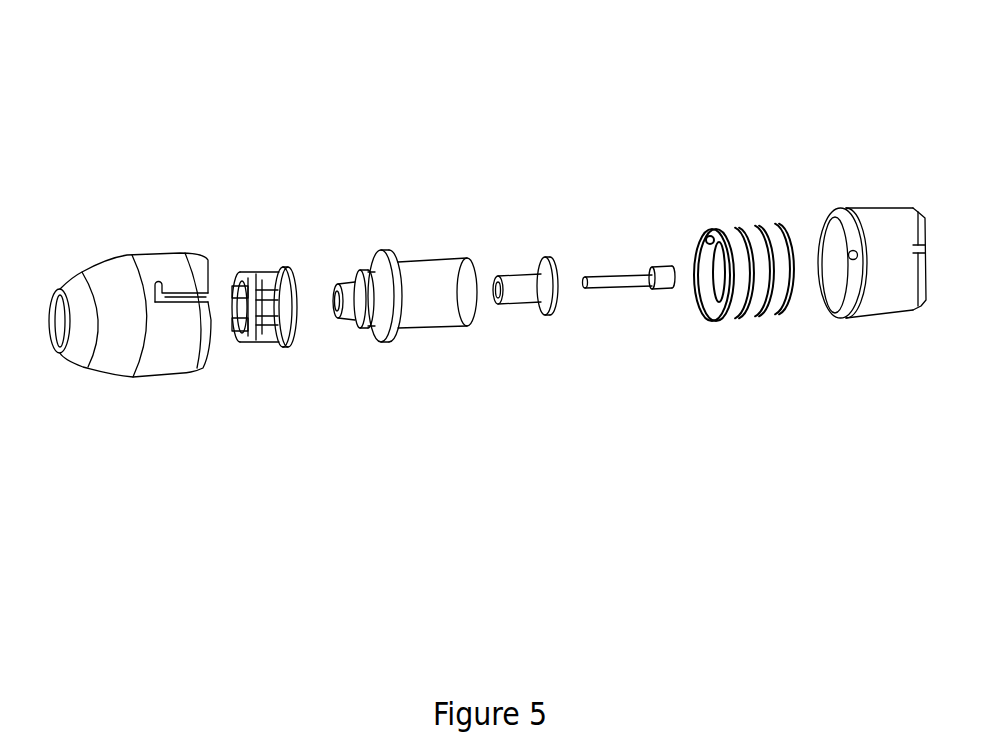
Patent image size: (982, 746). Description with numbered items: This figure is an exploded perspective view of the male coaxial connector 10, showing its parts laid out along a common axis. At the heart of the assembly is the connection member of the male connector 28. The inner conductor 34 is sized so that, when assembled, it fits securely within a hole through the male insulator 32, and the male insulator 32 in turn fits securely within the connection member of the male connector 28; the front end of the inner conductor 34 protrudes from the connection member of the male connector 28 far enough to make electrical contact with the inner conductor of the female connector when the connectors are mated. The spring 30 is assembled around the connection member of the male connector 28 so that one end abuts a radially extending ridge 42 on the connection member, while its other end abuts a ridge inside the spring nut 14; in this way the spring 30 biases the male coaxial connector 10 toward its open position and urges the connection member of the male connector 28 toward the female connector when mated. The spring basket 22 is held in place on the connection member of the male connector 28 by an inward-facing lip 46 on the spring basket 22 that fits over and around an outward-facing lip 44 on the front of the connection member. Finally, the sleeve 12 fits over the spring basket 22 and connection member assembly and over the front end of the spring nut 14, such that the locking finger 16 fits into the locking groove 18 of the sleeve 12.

The male coaxial connector 10 is at (498, 86).
The sleeve 12 is at (155, 390).
The spring nut 14 is at (861, 333).
The locking finger 16 is at (856, 250).
The locking groove 18 is at (182, 296).
The spring basket 22 is at (273, 362).
The connection member of the male connector 28 is at (438, 347).
The spring 30 is at (742, 338).
The male insulator 32 is at (555, 336).
The inner conductor 34 is at (662, 306).
The radially extending ridge 42 is at (383, 253).
The outward-facing lip 44 is at (364, 332).
The inward-facing lip 46 is at (294, 278).